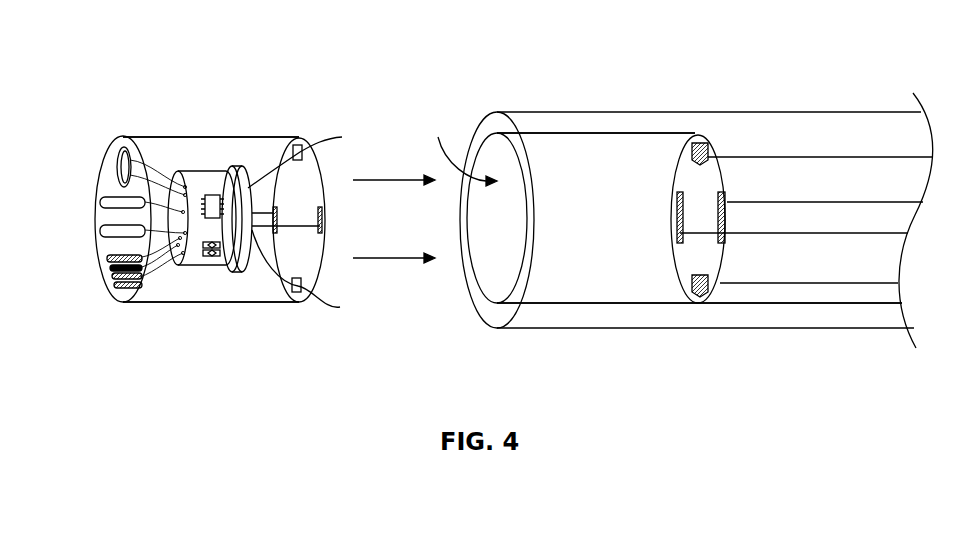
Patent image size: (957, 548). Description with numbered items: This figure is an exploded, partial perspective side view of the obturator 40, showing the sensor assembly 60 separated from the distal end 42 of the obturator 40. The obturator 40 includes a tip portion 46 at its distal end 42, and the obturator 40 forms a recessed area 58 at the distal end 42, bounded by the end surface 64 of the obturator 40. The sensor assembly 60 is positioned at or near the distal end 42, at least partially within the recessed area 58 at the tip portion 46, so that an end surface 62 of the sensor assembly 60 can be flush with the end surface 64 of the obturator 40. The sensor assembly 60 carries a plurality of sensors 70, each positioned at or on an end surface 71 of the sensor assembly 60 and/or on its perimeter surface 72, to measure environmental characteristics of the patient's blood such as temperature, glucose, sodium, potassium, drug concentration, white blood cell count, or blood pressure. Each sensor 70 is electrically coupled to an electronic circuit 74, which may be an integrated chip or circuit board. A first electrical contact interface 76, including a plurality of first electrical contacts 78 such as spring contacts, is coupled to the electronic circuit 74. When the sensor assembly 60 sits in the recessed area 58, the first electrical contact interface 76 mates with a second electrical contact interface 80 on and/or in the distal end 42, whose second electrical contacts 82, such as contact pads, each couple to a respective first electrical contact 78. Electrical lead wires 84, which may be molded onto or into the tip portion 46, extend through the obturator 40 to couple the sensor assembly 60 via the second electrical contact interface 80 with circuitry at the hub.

The obturator 40 is at (906, 62).
The distal end 42 is at (673, 110).
The tip portion 46 is at (585, 78).
The recessed area 58 is at (460, 148).
The sensor assembly 60 is at (179, 98).
The end surface 62 is at (122, 304).
The end surface 64 is at (497, 124).
The sensor 70 is at (127, 177).
The end surface 71 is at (120, 140).
The perimeter surface 72 is at (165, 304).
The electronic circuit 74 is at (207, 172).
The first electrical contact interface 76 is at (308, 123).
The first electrical contact 78 is at (258, 325).
The second electrical contact interface 80 is at (682, 258).
The second electrical contact 82 is at (700, 294).
The electrical lead wire 84 is at (752, 157).